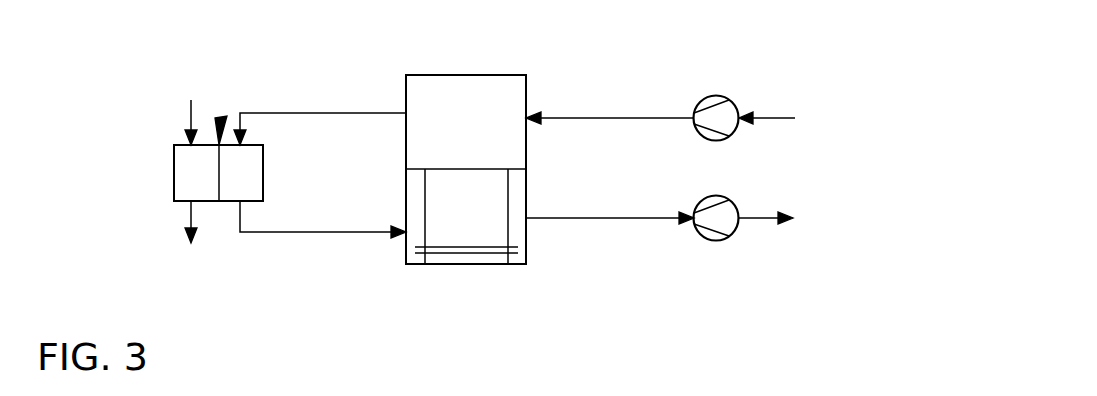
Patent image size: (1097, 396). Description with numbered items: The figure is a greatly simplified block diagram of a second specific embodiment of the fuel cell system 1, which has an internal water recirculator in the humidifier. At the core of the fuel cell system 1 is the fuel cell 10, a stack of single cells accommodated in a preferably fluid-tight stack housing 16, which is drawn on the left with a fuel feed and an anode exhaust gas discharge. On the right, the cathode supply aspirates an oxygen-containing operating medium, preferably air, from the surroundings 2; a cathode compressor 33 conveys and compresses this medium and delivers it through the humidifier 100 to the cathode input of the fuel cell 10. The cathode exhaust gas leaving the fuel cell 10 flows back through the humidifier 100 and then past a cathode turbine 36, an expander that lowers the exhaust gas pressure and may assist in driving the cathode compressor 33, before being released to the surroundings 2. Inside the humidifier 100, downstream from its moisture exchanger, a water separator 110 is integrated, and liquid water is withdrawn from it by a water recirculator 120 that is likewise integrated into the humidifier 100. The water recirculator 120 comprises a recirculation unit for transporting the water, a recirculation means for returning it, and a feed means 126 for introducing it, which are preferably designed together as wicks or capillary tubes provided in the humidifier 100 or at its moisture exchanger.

The fuel cell system 1 is at (297, 28).
The surroundings 2 is at (849, 130).
The stack housing 16 is at (174, 173).
The fuel cell 10 is at (222, 117).
The humidifier 100 is at (495, 75).
The water separator 110 is at (515, 227).
The feed means 126 is at (415, 232).
The water recirculator 120 is at (450, 247).
The cathode compressor 33 is at (733, 105).
The cathode turbine 36 is at (733, 229).